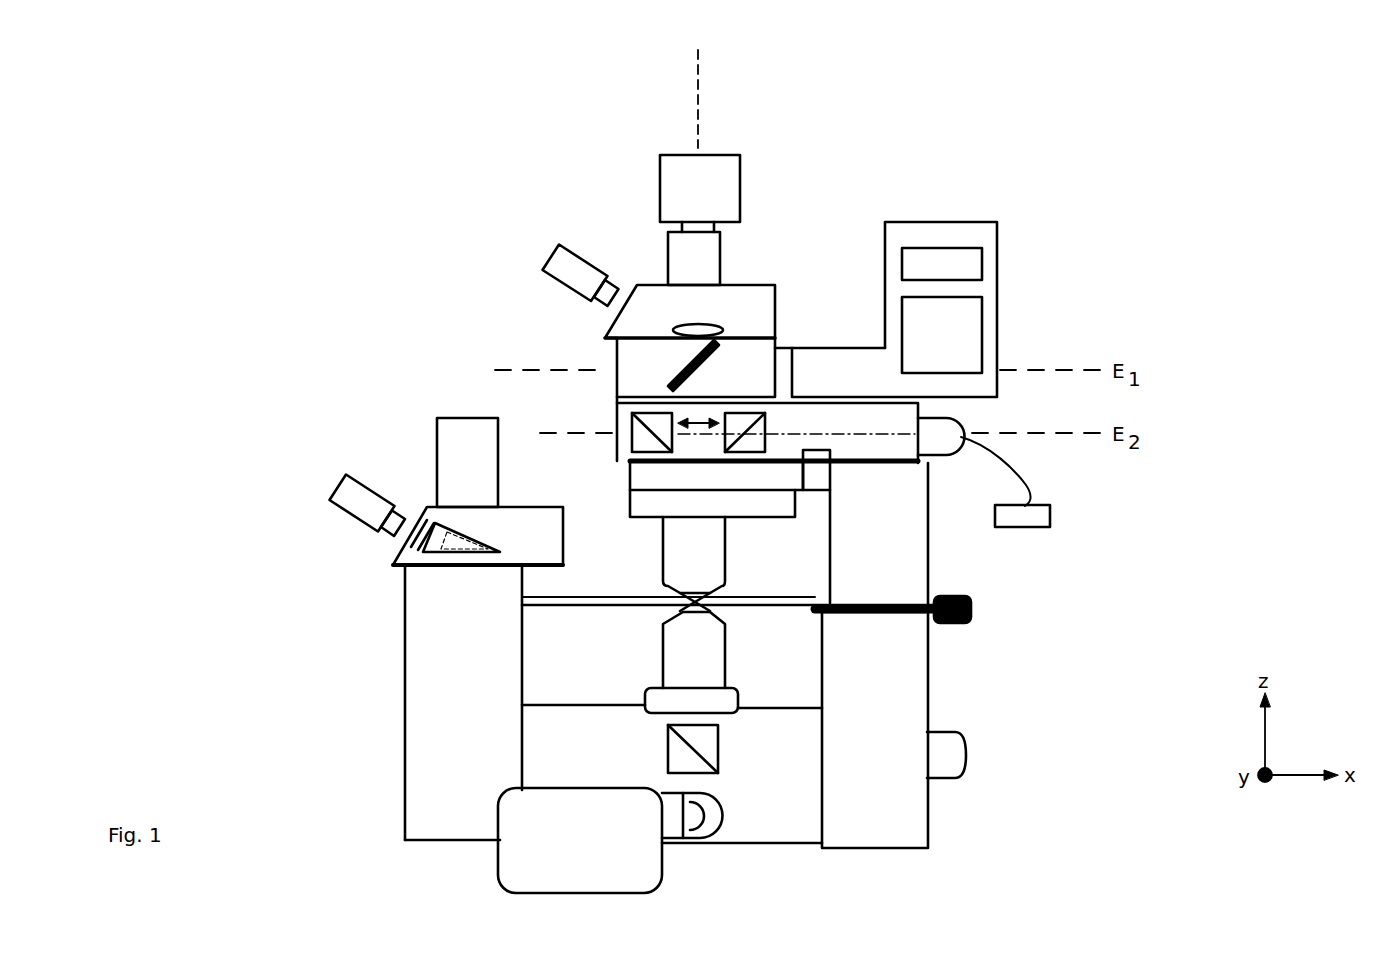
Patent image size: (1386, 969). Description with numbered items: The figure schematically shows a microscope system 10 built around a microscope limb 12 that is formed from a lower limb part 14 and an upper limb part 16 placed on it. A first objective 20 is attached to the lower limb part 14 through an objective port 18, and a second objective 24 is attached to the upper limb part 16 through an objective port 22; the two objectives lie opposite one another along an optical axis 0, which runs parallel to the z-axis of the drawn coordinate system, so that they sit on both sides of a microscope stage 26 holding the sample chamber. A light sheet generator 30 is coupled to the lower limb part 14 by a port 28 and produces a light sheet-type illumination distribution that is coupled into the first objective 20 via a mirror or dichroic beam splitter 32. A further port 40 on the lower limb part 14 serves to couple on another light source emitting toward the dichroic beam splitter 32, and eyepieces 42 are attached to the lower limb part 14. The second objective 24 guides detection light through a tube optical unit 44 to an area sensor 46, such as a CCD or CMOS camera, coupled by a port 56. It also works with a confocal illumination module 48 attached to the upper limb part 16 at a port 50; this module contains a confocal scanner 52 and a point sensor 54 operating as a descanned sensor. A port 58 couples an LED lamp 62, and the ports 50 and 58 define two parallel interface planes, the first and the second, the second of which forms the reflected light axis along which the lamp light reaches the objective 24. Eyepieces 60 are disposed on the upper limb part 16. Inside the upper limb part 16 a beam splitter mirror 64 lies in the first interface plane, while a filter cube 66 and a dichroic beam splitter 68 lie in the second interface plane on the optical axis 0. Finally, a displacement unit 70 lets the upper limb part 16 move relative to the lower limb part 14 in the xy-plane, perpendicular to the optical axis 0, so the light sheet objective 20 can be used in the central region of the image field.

The optical axis 0 is at (699, 103).
The microscope system 10 is at (256, 205).
The microscope limb 12 is at (1178, 350).
The lower limb part 14 is at (928, 690).
The upper limb part 16 is at (928, 552).
The objective port 18 is at (645, 698).
The first objective 20 is at (725, 668).
The objective port 22 is at (770, 517).
The second objective 24 is at (663, 552).
The microscope stage 26 is at (562, 607).
The port 28 is at (700, 843).
The light sheet generator 30 is at (498, 873).
The dichroic beam splitter 32 is at (722, 752).
The port 40 is at (966, 732).
The eyepieces 42 is at (340, 472).
The tube optical unit 44 is at (712, 328).
The area sensor 46 is at (660, 218).
The confocal illumination module 48 is at (997, 252).
The port 50 is at (793, 347).
The confocal scanner 52 is at (902, 356).
The point sensor 54 is at (902, 265).
The port 56 is at (735, 235).
The port 58 is at (930, 458).
The eyepieces 60 is at (548, 260).
The LED lamp 62 is at (1050, 514).
The beam splitter mirror 64 is at (680, 378).
The filter cube 66 is at (722, 453).
The dichroic beam splitter 68 is at (630, 432).
The displacement unit 70 is at (972, 607).